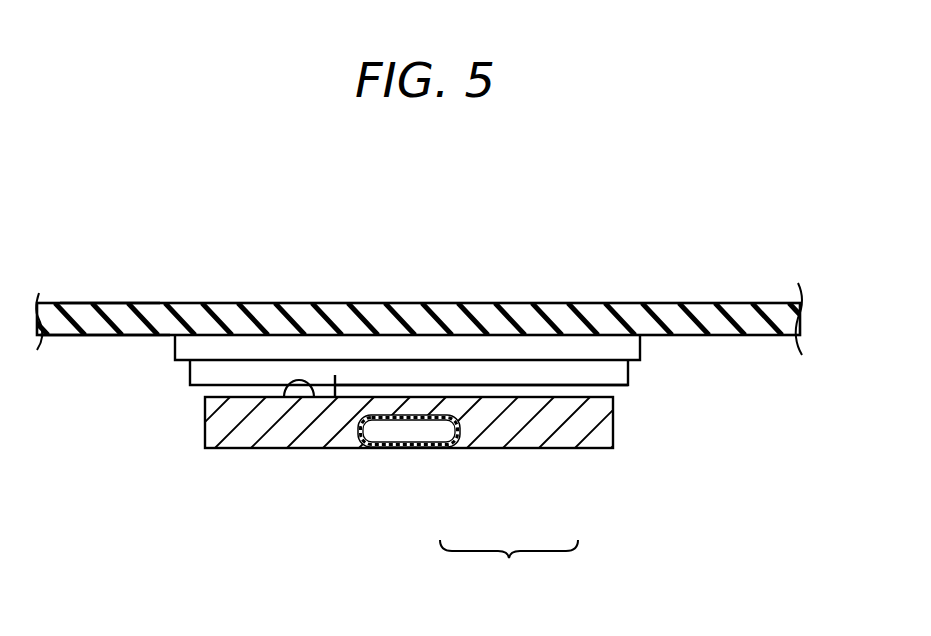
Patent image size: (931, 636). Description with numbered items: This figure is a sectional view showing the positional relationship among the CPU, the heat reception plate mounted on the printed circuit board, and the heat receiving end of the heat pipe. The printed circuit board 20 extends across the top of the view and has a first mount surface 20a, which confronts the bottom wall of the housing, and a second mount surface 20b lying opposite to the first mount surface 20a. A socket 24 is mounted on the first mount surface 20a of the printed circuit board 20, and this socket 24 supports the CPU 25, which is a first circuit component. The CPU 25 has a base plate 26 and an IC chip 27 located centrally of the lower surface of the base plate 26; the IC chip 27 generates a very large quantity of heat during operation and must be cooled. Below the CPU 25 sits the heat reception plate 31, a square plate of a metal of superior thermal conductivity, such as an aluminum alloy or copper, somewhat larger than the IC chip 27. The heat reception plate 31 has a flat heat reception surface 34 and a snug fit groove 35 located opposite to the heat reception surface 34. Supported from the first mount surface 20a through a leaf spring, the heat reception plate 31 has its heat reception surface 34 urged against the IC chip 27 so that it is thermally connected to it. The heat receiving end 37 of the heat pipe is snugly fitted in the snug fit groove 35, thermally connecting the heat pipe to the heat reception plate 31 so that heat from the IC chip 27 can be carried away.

The printed circuit board 20 is at (722, 303).
The first mount surface 20a is at (76, 337).
The second mount surface 20b is at (107, 303).
The socket 24 is at (577, 348).
The CPU 25 is at (509, 572).
The base plate 26 is at (553, 370).
The IC chip 27 is at (483, 370).
The heat reception plate 31 is at (260, 413).
The heat reception surface 34 is at (300, 384).
The snug fit groove 35 is at (347, 448).
The heat receiving end 37 is at (402, 432).